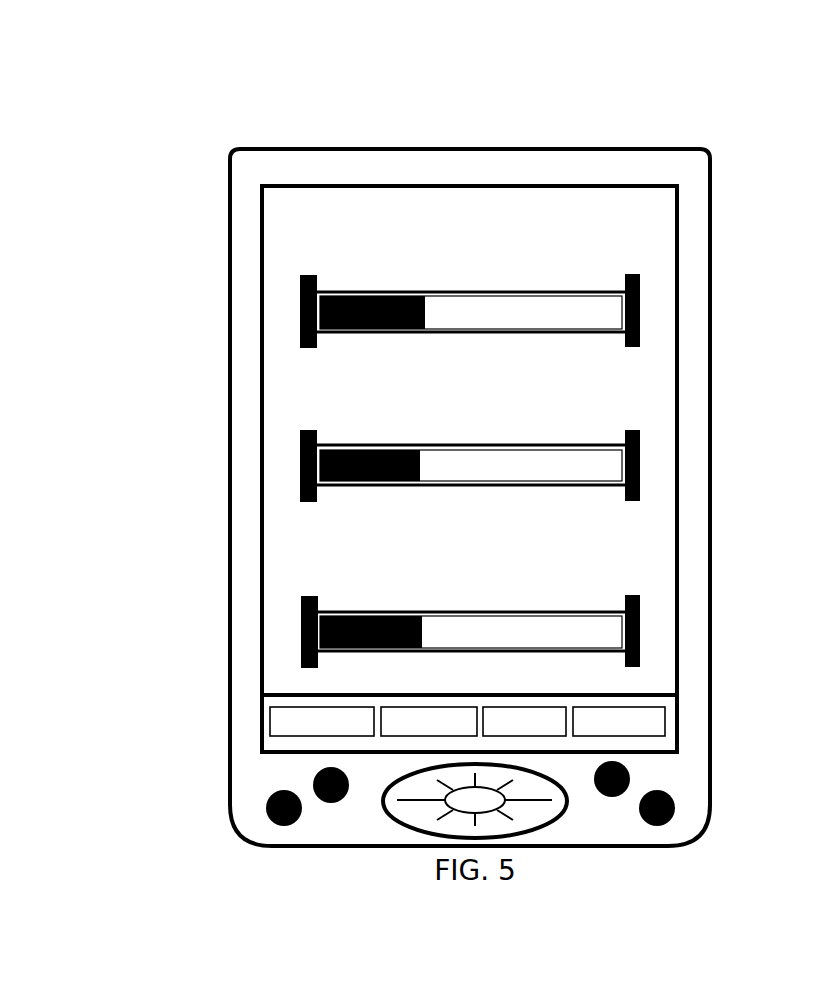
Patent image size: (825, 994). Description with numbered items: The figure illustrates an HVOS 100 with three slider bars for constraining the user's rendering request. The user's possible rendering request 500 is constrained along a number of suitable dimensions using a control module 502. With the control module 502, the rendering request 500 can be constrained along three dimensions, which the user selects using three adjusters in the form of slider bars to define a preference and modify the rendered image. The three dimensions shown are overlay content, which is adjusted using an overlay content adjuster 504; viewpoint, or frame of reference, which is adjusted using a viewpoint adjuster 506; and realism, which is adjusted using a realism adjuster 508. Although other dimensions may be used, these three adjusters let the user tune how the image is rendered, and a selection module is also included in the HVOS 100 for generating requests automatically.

The HVOS 100 is at (116, 138).
The rendering request 500 is at (270, 729).
The control module 502 is at (277, 227).
The overlay content adjuster 504 is at (500, 652).
The viewpoint adjuster 506 is at (535, 332).
The realism adjuster 508 is at (532, 487).